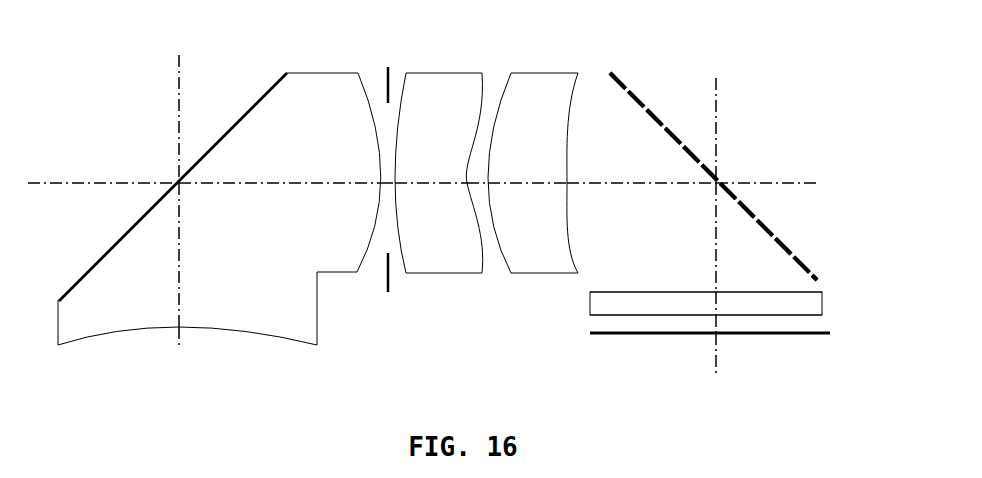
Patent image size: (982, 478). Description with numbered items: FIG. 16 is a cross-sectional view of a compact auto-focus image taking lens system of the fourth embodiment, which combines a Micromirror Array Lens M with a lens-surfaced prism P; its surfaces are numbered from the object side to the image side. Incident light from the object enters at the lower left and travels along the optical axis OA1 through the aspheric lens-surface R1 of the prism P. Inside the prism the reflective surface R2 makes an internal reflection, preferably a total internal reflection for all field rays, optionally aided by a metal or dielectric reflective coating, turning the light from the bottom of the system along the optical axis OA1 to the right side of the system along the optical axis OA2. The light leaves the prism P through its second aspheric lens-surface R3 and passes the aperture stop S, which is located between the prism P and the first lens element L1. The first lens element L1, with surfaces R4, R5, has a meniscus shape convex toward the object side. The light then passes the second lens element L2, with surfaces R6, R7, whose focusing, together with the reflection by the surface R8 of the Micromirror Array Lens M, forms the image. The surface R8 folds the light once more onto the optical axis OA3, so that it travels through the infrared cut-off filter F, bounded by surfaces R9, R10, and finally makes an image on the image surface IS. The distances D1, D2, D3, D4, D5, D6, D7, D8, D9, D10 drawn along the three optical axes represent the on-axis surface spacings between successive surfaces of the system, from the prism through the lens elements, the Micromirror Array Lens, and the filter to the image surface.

The lens-surfaced prism P is at (75, 296).
The lens-surface of the lens-surfaced prism R1 is at (117, 335).
The reflective surface of the lens-surfaced prism R2 is at (197, 157).
The lens-surface of the lens-surfaced prism R3 is at (380, 160).
The aperture stop S is at (387, 297).
The first lens element L1 is at (437, 278).
The surface of the first lens element R4 is at (402, 85).
The surface of the first lens element R5 is at (468, 163).
The second lens element L2 is at (541, 278).
The surface of the second lens element R6 is at (503, 88).
The surface of the second lens element R7 is at (570, 142).
The Micromirror Array Lens M is at (665, 97).
The surface of the Micromirror Array Lens R8 is at (740, 167).
The infrared cut-off filter F is at (635, 302).
The surface of the infrared cut-off filter R9 is at (640, 290).
The surface of the infrared cut-off filter R10 is at (657, 315).
The image surface IS is at (780, 335).
The optical axis OA1 is at (182, 345).
The optical axis OA2 is at (90, 185).
The optical axis OA3 is at (718, 360).
The on-axis surface spacing D1 is at (183, 265).
The on-axis surface spacing D2 is at (268, 190).
The on-axis surface spacing D3 is at (385, 186).
The on-axis surface spacing D4 is at (422, 186).
The on-axis surface spacing D5 is at (478, 186).
The on-axis surface spacing D6 is at (520, 186).
The on-axis surface spacing D7 is at (622, 186).
The on-axis surface spacing D8 is at (720, 233).
The on-axis surface spacing D9 is at (717, 303).
The on-axis surface spacing D10 is at (717, 322).